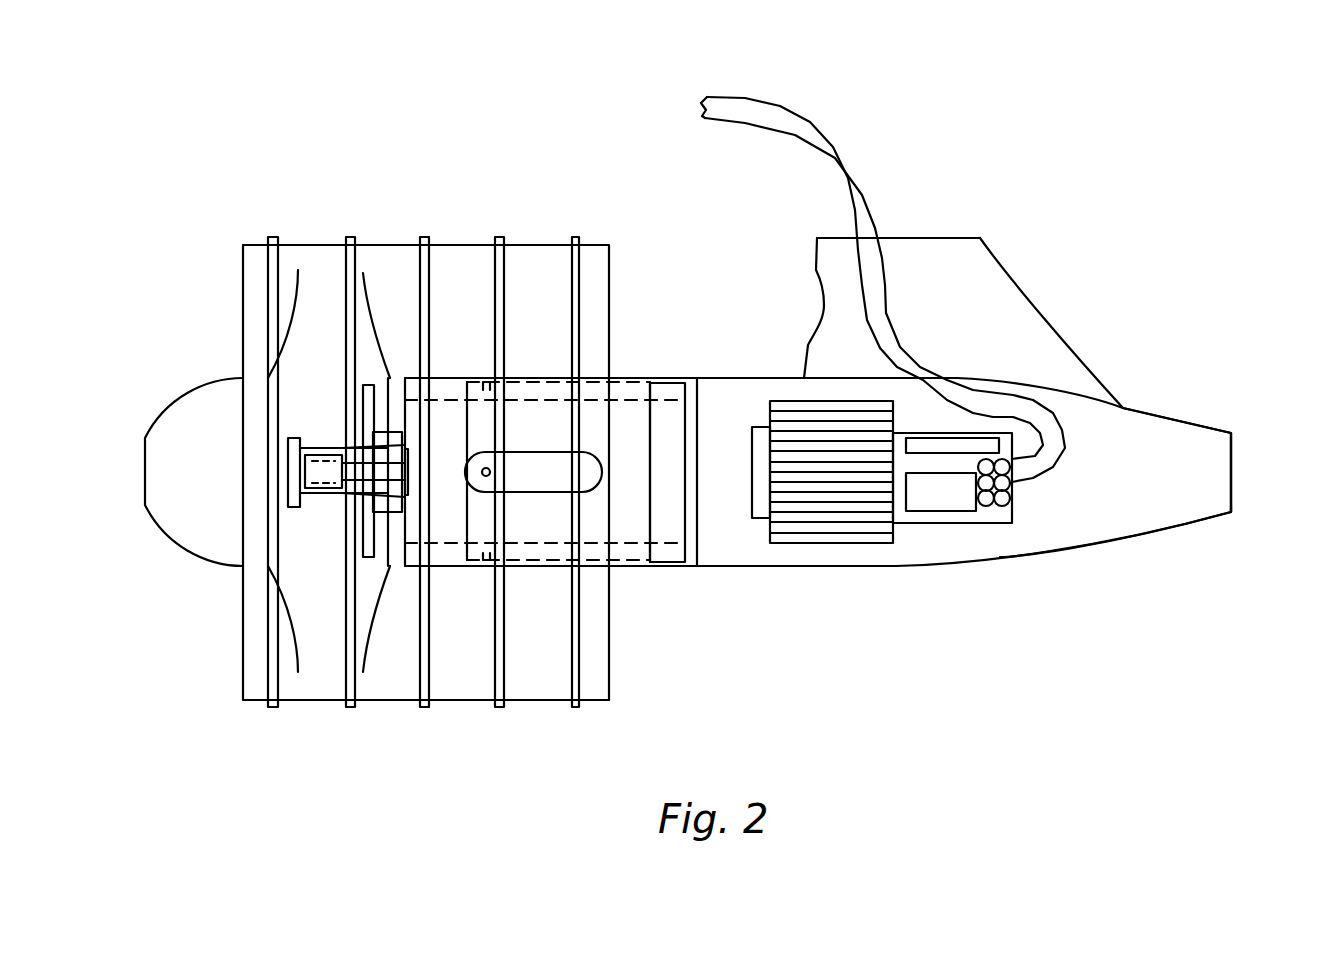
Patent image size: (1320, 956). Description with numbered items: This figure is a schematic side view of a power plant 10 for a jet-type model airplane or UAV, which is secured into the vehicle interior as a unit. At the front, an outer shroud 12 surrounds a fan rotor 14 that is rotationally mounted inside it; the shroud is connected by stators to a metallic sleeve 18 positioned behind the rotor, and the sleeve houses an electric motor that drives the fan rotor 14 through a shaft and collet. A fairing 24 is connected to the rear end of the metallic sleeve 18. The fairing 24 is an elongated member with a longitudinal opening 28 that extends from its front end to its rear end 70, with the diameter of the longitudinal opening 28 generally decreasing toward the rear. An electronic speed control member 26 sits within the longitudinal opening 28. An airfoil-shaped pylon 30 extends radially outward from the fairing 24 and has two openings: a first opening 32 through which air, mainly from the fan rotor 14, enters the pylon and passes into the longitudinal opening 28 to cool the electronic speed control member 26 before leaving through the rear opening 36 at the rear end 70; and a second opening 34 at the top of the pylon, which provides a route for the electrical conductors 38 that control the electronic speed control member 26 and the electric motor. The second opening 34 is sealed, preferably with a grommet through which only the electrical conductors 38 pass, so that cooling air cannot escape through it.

The power plant 10 is at (570, 138).
The outer shroud 12 is at (556, 700).
The fan rotor 14 is at (180, 393).
The metallic sleeve 18 is at (625, 553).
The fairing 24 is at (1082, 545).
The electronic speed control member 26 is at (866, 538).
The longitudinal opening 28 is at (1143, 427).
The airfoil-shaped pylon 30 is at (1027, 312).
The first opening 32 is at (822, 315).
The second opening 34 is at (960, 238).
The rear opening 36 is at (1234, 484).
The electrical conductors 38 is at (848, 155).
The rear end 70 is at (1226, 514).